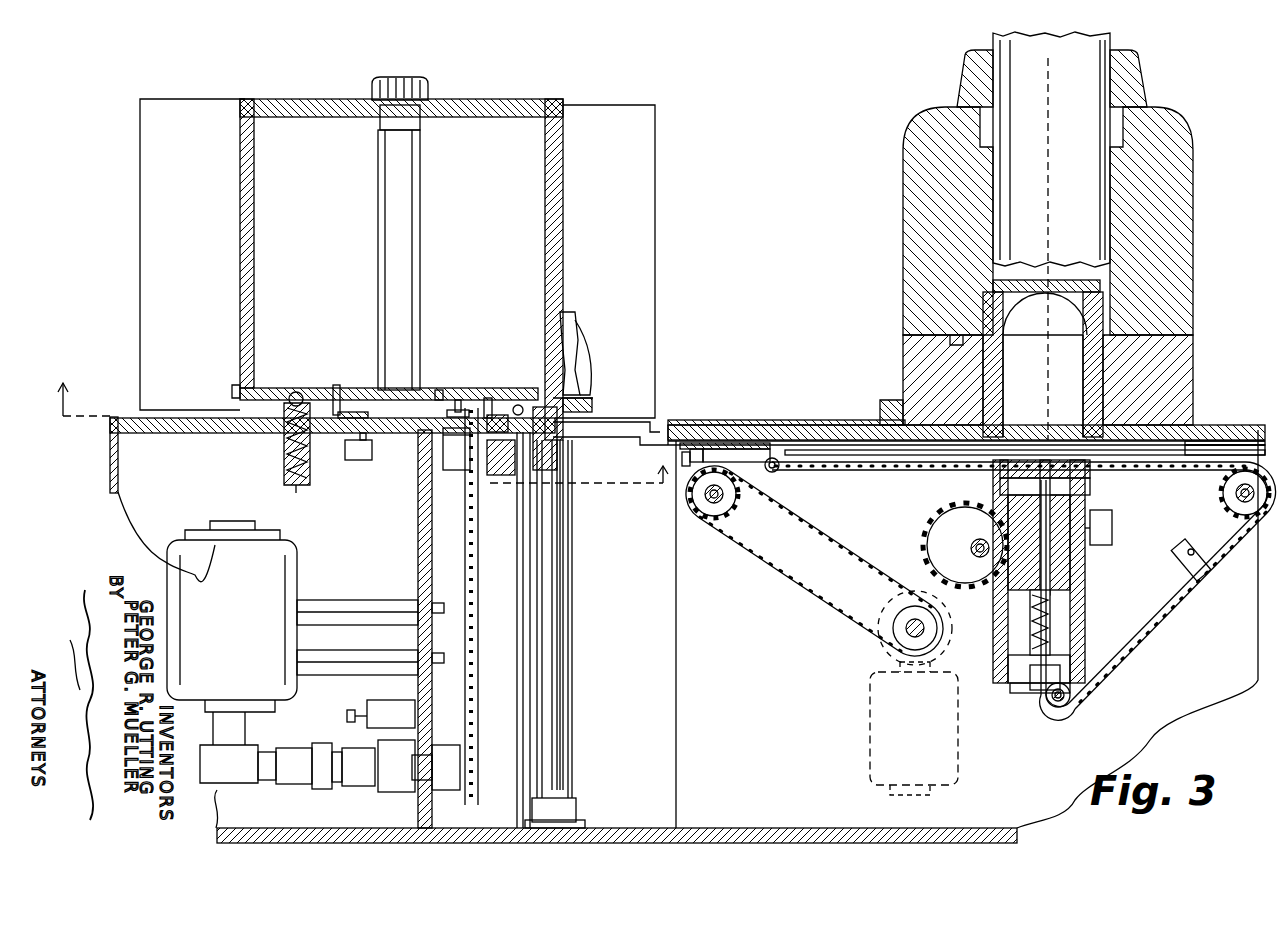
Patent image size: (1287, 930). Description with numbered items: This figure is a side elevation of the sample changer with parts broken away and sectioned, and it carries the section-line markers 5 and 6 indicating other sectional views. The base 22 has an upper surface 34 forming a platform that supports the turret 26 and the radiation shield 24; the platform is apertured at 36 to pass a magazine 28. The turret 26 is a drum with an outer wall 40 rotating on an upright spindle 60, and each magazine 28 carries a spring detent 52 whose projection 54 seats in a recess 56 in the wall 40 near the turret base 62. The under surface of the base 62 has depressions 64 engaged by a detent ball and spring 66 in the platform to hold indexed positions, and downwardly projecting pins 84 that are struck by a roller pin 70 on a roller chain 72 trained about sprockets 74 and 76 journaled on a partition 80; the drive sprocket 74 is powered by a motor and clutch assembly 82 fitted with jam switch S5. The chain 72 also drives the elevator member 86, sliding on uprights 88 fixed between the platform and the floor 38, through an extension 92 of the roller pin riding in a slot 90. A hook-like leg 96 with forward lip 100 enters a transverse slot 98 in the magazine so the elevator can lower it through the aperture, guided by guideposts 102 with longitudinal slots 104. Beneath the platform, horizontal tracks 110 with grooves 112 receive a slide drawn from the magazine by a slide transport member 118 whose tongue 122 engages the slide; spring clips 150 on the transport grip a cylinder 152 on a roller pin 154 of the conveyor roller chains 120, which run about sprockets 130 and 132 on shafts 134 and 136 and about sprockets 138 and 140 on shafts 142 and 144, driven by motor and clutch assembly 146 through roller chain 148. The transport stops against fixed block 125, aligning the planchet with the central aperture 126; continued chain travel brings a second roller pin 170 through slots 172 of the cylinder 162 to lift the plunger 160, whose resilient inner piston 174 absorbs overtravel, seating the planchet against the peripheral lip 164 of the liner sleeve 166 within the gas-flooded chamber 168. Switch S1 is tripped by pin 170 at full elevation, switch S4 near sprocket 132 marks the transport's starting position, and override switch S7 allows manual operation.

The base 22 is at (112, 470).
The shield 24 is at (1200, 218).
The turret 26 is at (520, 99).
The magazine 28 is at (185, 100).
The upper surface 34 is at (210, 433).
The aperture 36 is at (668, 420).
The floor 38 is at (470, 828).
The outer wall 40 is at (254, 222).
The spring detent 52 is at (576, 350).
The projection 54 is at (585, 385).
The recess 56 is at (235, 388).
The spindle 60 is at (420, 213).
The base of the turret 62 is at (439, 390).
The depressions 64 is at (296, 392).
The detent ball and spring 66 is at (312, 478).
The roller pin 70 is at (370, 417).
The roller chain 72 is at (478, 565).
The sprocket 74 is at (455, 745).
The sprocket 76 is at (457, 472).
The partition 80 is at (418, 517).
The motor and clutch assembly 82 is at (292, 745).
The pins 84 is at (337, 385).
The elevator member 86 is at (500, 478).
The uprights 88 is at (517, 598).
The slot 90 is at (508, 416).
The extension 92 is at (488, 398).
The leg 96 is at (590, 440).
The transverse slot 98 is at (248, 402).
The forward lip 100 is at (592, 398).
The guideposts 102 is at (572, 532).
The longitudinal slot 104 is at (572, 593).
The tracks 110 is at (1180, 450).
The grooves 112 is at (850, 445).
The slide transport member 118 is at (740, 424).
The roller chains 120 is at (858, 462).
The tongue 122 is at (680, 465).
The fixed block 125 is at (1185, 445).
The central aperture 126 is at (1008, 417).
The sprocket 130 is at (705, 515).
The sprocket 132 is at (1250, 520).
The shaft 134 is at (700, 505).
The shaft 136 is at (1236, 493).
The sprocket 138 is at (1050, 707).
The sprocket 140 is at (928, 548).
The shaft 142 is at (1070, 690).
The shaft 144 is at (980, 539).
The motor and clutch assembly 146 is at (870, 712).
The roller chain 148 is at (790, 588).
The spring clips 150 is at (775, 445).
The cylinder 152 is at (778, 472).
The roller pin 154 is at (790, 450).
The plunger 160 is at (1085, 590).
The sleeve or cylinder 162 is at (1085, 625).
The peripheral lip 164 is at (1010, 336).
The sleeve 166 is at (1130, 348).
The chamber 168 is at (1100, 298).
The second roller pin 170 is at (1252, 475).
The slot 172 is at (1028, 688).
The inner piston 174 is at (1092, 488).
The section line 5 is at (362, 446).
The section line 6 is at (1030, 58).
The switch S1 is at (1112, 530).
The switch S4 is at (1186, 570).
The switch S5 is at (385, 700).
The override switch S7 is at (362, 462).